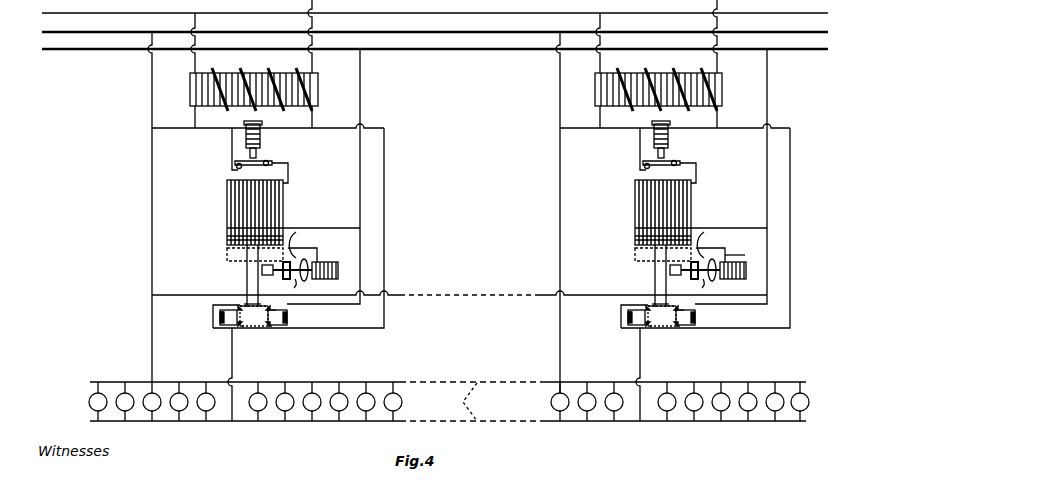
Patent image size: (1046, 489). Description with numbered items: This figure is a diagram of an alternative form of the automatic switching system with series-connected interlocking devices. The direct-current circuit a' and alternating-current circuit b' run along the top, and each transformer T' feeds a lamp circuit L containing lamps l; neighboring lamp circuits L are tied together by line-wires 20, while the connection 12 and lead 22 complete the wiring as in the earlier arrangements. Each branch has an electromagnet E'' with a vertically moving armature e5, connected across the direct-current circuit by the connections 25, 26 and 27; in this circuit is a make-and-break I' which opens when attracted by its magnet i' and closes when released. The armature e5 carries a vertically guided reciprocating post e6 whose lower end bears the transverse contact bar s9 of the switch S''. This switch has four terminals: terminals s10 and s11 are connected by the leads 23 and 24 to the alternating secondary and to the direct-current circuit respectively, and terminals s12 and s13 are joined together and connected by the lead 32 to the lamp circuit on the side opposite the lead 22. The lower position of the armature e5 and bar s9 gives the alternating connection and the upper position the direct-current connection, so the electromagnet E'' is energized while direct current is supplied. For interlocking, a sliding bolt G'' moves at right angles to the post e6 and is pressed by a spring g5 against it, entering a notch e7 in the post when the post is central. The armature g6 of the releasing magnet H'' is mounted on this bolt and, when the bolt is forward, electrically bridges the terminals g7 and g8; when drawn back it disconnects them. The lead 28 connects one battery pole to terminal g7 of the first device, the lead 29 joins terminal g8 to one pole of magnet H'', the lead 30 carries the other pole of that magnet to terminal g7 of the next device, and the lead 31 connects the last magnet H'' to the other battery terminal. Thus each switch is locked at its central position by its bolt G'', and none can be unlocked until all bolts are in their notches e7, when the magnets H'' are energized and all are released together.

The direct-current circuit a' is at (435, 22).
The alternating-current circuit b' is at (435, 50).
The transformer T' is at (472, 64).
The connection 12 is at (158, 131).
The lead 22 is at (152, 232).
The lead 23 is at (385, 190).
The lead 24 is at (360, 189).
The connection 25 is at (292, 228).
The connection 26 is at (289, 170).
The connection 27 is at (232, 138).
The magnet i' is at (464, 139).
The make-and-break I' is at (447, 166).
The electromagnet E'' is at (444, 212).
The armature e5 is at (227, 241).
The reciprocating post e6 is at (247, 271).
The notch e7 is at (232, 255).
The sliding bolt G'' is at (491, 279).
The spring g5 is at (282, 264).
The armature g6 is at (310, 281).
The terminal g7 is at (296, 284).
The terminal g8 is at (498, 242).
The releasing magnet H'' is at (529, 259).
The lead 29 is at (318, 252).
The lead 31 is at (744, 256).
The lead 28 is at (170, 296).
The lead 30 is at (398, 295).
The switch S'' is at (454, 329).
The contact bar s9 is at (244, 304).
The terminal s10 is at (280, 329).
The terminal s11 is at (288, 313).
The terminal s12 is at (216, 311).
The terminal s13 is at (234, 328).
The lead 32 is at (232, 369).
The lamp circuit L is at (346, 383).
The lamps l is at (339, 409).
The line-wires 20 is at (470, 401).